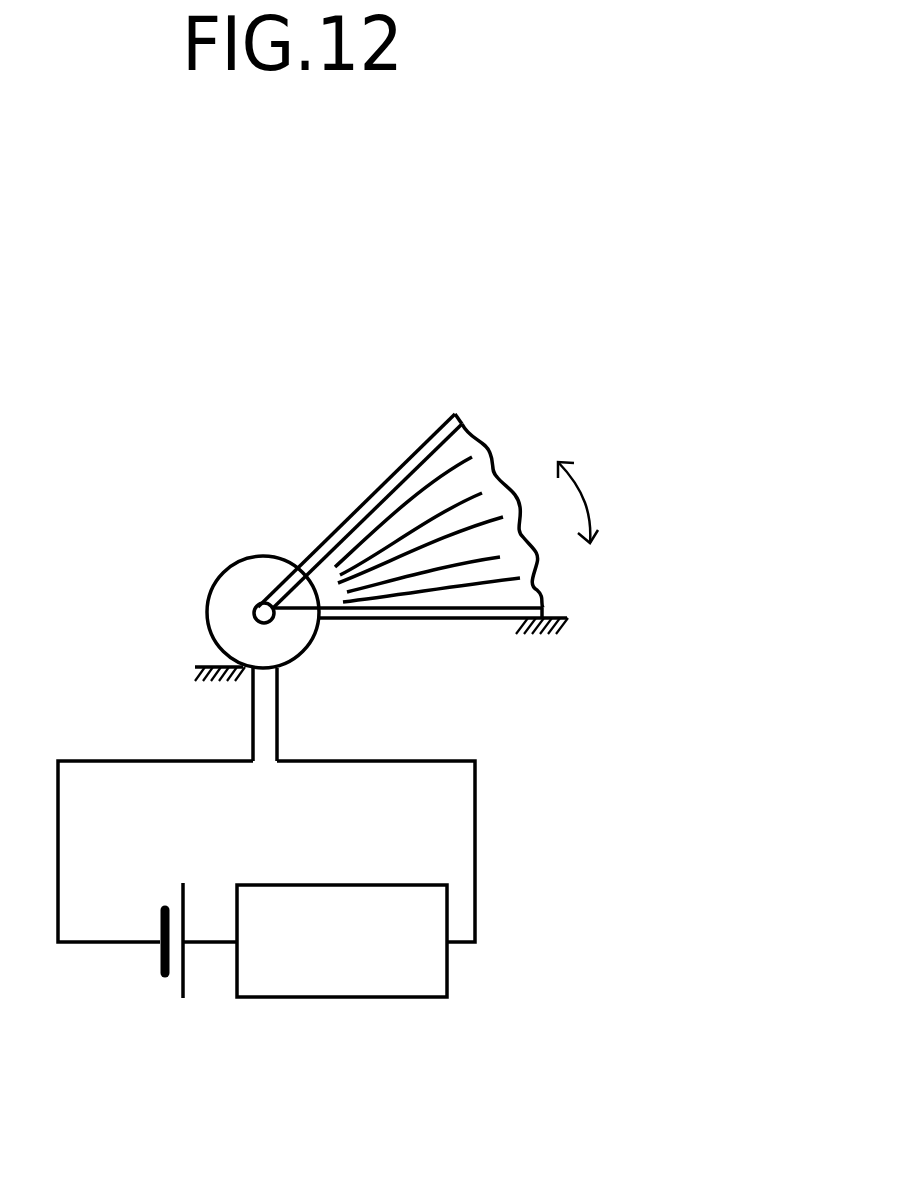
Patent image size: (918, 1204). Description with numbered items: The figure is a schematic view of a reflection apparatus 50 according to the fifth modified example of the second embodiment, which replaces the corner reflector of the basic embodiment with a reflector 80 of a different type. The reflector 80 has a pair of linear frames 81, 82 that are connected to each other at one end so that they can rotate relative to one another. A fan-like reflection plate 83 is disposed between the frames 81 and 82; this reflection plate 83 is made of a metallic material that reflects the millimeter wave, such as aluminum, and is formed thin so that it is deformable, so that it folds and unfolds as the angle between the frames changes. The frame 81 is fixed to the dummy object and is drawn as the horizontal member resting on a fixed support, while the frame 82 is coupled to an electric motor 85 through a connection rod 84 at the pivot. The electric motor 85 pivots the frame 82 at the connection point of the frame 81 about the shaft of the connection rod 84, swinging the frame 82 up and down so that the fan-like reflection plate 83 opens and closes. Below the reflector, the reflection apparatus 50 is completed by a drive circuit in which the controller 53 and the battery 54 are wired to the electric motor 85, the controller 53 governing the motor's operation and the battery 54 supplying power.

The reflection apparatus 50 is at (351, 914).
The controller 53 is at (338, 997).
The battery 54 is at (185, 977).
The reflector 80 is at (438, 585).
The frame 81 is at (463, 620).
The frame 82 is at (402, 470).
The fan-like reflection plate 83 is at (494, 455).
The connection rod 84 is at (254, 613).
The electric motor 85 is at (236, 562).